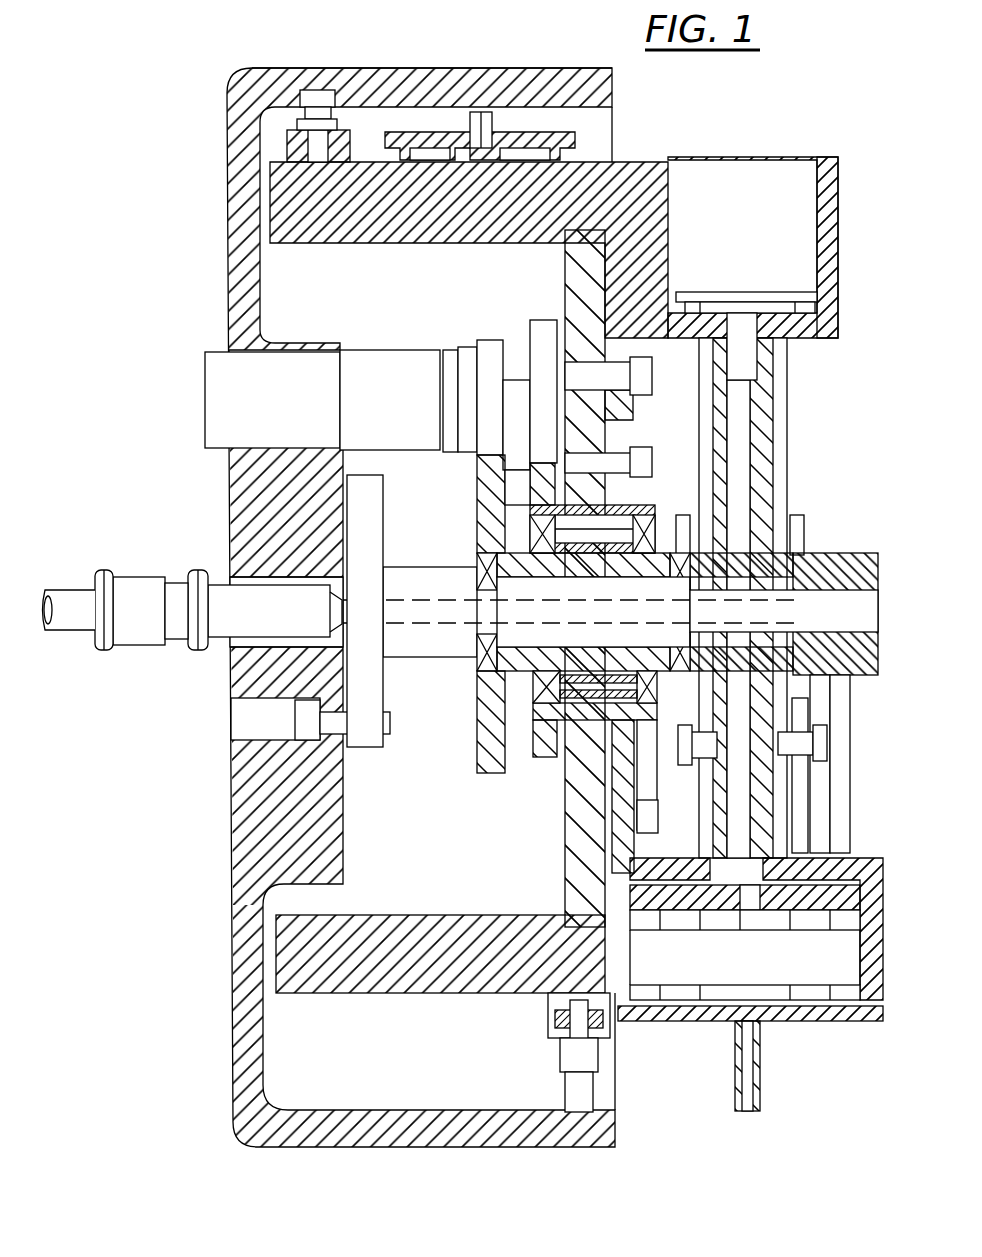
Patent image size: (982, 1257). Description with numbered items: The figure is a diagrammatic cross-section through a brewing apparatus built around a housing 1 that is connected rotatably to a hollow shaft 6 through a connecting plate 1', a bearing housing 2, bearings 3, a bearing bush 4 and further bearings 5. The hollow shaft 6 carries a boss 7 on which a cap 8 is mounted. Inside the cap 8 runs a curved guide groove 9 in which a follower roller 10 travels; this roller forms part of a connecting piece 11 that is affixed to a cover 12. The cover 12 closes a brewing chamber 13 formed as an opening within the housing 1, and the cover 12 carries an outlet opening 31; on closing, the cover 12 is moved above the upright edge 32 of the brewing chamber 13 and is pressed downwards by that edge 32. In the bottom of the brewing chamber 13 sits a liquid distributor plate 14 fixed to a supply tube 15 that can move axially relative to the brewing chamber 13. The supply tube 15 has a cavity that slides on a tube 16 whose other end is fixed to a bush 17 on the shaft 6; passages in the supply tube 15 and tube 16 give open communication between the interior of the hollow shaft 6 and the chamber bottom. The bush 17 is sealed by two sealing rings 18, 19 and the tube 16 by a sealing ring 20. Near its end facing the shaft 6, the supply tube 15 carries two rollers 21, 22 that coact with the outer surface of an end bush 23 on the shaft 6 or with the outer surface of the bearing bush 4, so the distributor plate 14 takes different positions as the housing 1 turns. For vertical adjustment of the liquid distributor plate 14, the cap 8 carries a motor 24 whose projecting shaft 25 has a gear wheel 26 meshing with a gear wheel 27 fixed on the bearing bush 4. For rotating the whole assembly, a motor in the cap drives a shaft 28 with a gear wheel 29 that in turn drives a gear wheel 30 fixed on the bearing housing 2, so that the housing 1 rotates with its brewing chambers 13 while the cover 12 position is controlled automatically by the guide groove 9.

The housing 1 is at (447, 607).
The connecting plate 1' is at (565, 578).
The bearing housing 2 is at (625, 478).
The bearings 3 is at (500, 530).
The bearing bush 4 is at (490, 680).
The bearings 5 is at (685, 660).
The hollow shaft 6 is at (490, 655).
The boss 7 is at (370, 540).
The cap 8 is at (425, 70).
The curved guide groove 9 is at (322, 118).
The follower roller 10 is at (310, 92).
The connecting piece 11 is at (290, 144).
The cover 12 is at (540, 135).
The brewing chamber 13 is at (822, 175).
The liquid distributor plate 14 is at (805, 300).
The supply tube 15 is at (770, 395).
The tube 16 is at (757, 440).
The bush 17 is at (800, 565).
The sealing ring 18 is at (878, 634).
The sealing ring 19 is at (715, 675).
The sealing ring 20 is at (742, 410).
The roller 21 is at (797, 530).
The roller 22 is at (683, 518).
The end bush 23 is at (858, 560).
The motor 24 is at (385, 356).
The projecting shaft 25 is at (454, 390).
The gear wheel 26 is at (490, 385).
The gear wheel 27 is at (480, 492).
The shaft 28 is at (514, 420).
The gear wheel 29 is at (542, 350).
The gear wheel 30 is at (510, 500).
The outlet opening 31 is at (480, 118).
The upright edge 32 is at (668, 158).